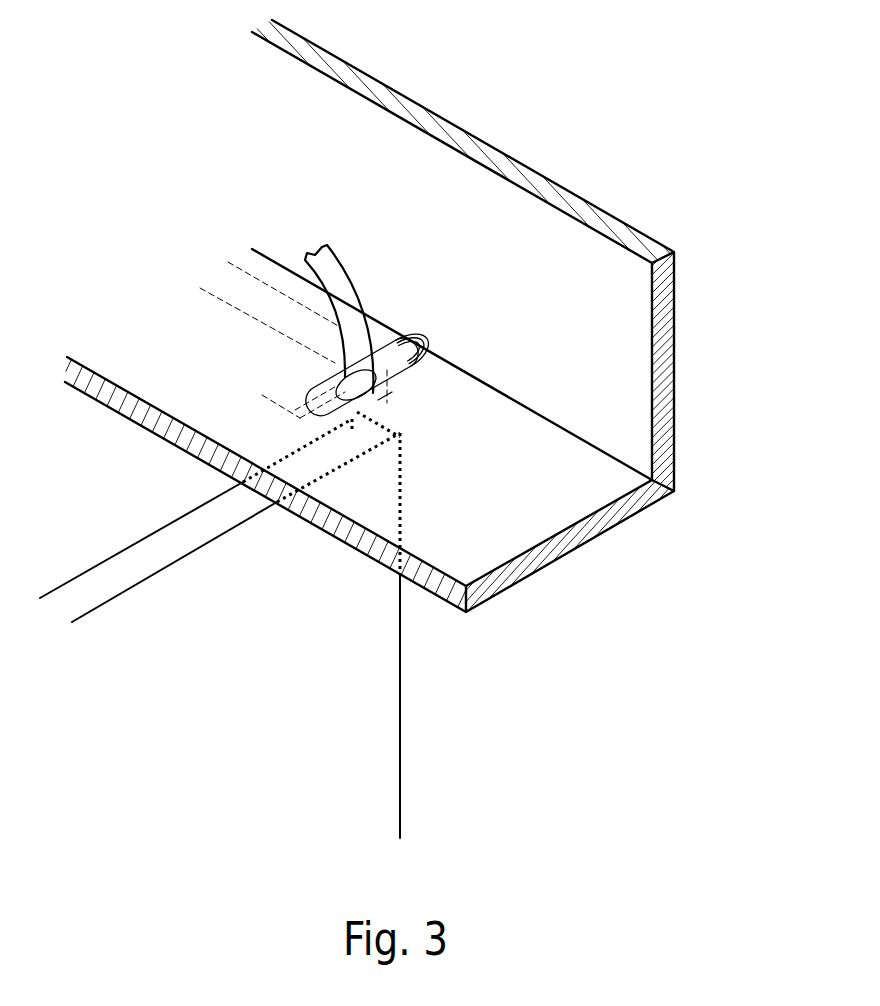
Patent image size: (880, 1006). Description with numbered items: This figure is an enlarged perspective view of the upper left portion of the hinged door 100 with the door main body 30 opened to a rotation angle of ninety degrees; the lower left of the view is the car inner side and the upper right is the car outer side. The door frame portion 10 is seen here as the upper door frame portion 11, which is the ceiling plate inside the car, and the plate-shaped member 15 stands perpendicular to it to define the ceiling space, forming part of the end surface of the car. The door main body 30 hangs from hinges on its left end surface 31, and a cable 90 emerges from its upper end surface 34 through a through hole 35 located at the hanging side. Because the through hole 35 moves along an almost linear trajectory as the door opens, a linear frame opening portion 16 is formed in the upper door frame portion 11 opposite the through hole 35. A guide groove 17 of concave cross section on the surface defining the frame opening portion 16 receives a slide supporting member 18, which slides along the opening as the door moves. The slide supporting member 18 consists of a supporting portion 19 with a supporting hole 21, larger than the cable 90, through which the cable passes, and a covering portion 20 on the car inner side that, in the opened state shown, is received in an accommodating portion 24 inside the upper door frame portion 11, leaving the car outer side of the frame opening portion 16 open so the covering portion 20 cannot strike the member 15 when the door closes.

The hinged door 100 is at (398, 336).
The door frame portion 10 is at (369, 450).
The upper door frame portion 11 is at (530, 582).
The plate-shaped member 15 is at (663, 368).
The frame opening portion 16 is at (305, 390).
The guide groove 17 is at (403, 338).
The slide supporting member 18 is at (343, 405).
The supporting portion 19 is at (410, 387).
The covering portion 20 is at (318, 400).
The supporting hole 21 is at (378, 403).
The accommodating portion 24 is at (262, 395).
The door main body 30 is at (158, 546).
The left end surface 31 is at (402, 740).
The upper end surface 34 is at (170, 540).
The through hole 35 is at (362, 432).
The cable 90 is at (332, 267).